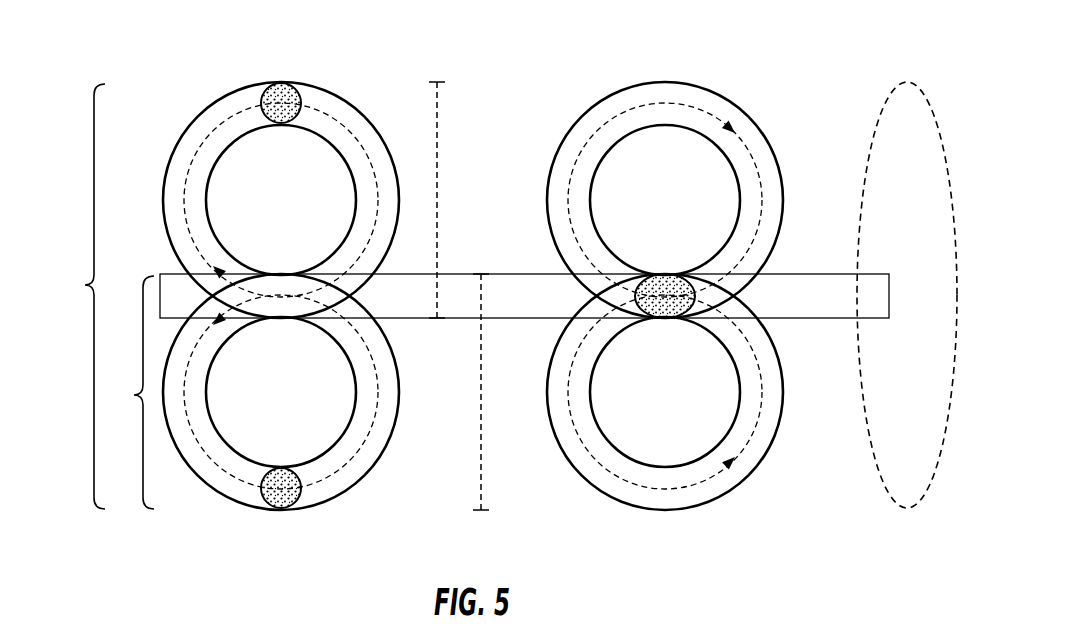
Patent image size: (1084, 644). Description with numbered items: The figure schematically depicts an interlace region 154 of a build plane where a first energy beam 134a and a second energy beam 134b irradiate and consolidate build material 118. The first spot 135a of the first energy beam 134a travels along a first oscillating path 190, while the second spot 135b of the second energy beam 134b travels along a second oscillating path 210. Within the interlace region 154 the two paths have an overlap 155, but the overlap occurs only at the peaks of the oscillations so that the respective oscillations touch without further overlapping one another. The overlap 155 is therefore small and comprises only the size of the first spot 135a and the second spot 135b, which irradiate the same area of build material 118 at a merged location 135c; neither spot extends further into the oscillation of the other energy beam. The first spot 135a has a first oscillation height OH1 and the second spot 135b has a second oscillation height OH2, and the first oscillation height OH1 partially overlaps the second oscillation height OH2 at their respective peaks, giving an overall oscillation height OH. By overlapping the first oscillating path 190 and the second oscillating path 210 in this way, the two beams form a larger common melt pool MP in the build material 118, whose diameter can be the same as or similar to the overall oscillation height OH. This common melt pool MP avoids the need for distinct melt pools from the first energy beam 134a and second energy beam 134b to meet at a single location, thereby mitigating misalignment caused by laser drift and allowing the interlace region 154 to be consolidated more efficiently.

The build material 118 is at (835, 167).
The first energy beam 134a is at (352, 107).
The second energy beam 134b is at (352, 485).
The first spot 135a is at (260, 105).
The second spot 135b is at (260, 487).
The merged location 135c is at (690, 260).
The interlace region 154 is at (75, 296).
The overlap 155 is at (897, 274).
The first oscillating path 190 is at (582, 150).
The second oscillating path 210 is at (582, 440).
The overall oscillation height OH is at (129, 392).
The first oscillation height OH1 is at (438, 187).
The second oscillation height OH2 is at (482, 440).
The melt pool MP is at (904, 82).